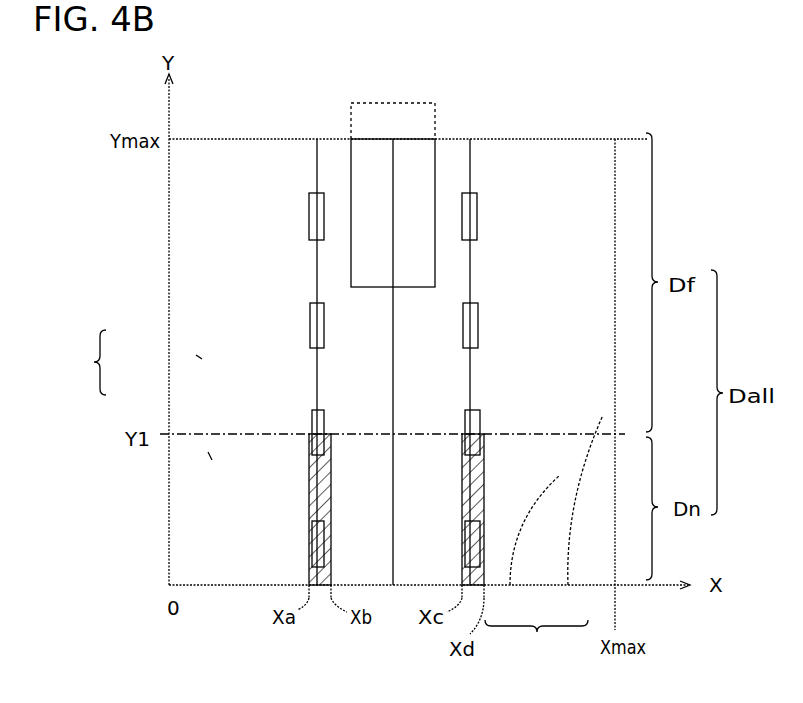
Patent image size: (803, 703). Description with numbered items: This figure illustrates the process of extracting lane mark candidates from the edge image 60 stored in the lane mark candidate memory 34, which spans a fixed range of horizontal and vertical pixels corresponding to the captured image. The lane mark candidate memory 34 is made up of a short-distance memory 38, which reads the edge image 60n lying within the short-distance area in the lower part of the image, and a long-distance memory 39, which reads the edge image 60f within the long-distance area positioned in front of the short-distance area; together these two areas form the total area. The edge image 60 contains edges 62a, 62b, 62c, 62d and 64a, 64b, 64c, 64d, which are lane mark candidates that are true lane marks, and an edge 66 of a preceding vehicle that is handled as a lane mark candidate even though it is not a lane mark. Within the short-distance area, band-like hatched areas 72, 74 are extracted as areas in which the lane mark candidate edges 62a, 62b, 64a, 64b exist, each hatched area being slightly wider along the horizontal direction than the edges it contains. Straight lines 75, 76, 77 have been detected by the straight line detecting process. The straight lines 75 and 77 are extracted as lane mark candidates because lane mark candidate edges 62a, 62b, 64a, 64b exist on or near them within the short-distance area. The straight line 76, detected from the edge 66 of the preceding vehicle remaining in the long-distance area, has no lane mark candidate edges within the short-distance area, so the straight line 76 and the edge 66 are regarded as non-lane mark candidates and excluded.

The lane mark candidate memory 34 is at (83, 362).
The short-distance memory 38 is at (212, 460).
The long-distance memory 39 is at (200, 357).
The edge image 60 is at (536, 642).
The edge image within the short-distance area 60n is at (528, 547).
The edge image within the long-distance area 60f is at (575, 517).
The lane mark candidate edge 62a is at (462, 540).
The lane mark candidate edge 62b is at (462, 445).
The edge 62c is at (462, 313).
The edge 62d is at (480, 222).
The lane mark candidate edge 64a is at (308, 540).
The lane mark candidate edge 64b is at (308, 445).
The edge 64c is at (308, 325).
The edge 64d is at (307, 213).
The edge of the preceding vehicle 66 is at (368, 290).
The band-like hatched area 72 is at (462, 490).
The band-like hatched area 74 is at (308, 490).
The straight line 75 is at (468, 381).
The straight line 76 is at (392, 381).
The straight line 77 is at (315, 381).